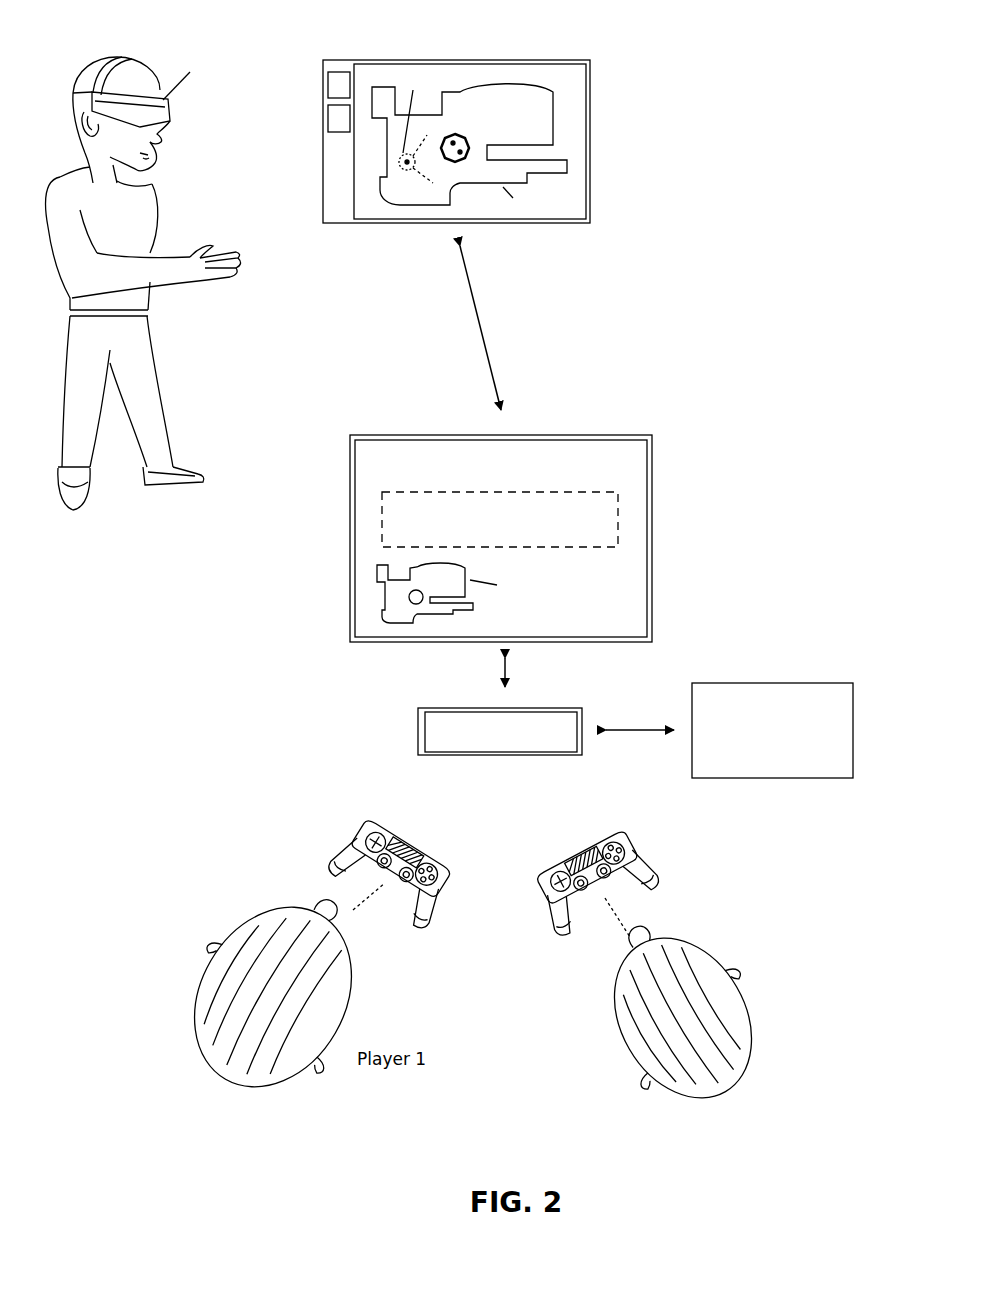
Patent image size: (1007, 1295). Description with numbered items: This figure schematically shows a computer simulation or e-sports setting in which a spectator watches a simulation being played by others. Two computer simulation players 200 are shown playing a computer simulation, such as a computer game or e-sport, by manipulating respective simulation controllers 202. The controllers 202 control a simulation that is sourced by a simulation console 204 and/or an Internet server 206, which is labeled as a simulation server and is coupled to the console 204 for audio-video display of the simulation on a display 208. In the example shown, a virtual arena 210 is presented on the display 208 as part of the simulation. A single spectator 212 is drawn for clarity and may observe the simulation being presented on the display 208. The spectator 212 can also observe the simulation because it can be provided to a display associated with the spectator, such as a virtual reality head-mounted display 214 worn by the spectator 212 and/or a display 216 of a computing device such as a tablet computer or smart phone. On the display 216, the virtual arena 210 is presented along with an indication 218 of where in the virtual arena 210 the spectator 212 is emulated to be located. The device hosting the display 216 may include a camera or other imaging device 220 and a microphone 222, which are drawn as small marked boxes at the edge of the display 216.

The computer simulation players 200 is at (707, 957).
The simulation controllers 202 is at (648, 863).
The simulation console 204 is at (540, 708).
The Internet server 206 is at (798, 683).
The display 208 is at (655, 472).
The virtual arena 210 is at (553, 127).
The spectator 212 is at (148, 300).
The head-mounted display 214 is at (173, 120).
The display of a computing device 216 is at (465, 131).
The indication 218 is at (397, 163).
The camera or other imaging device 220 is at (328, 76).
The microphone 222 is at (328, 110).